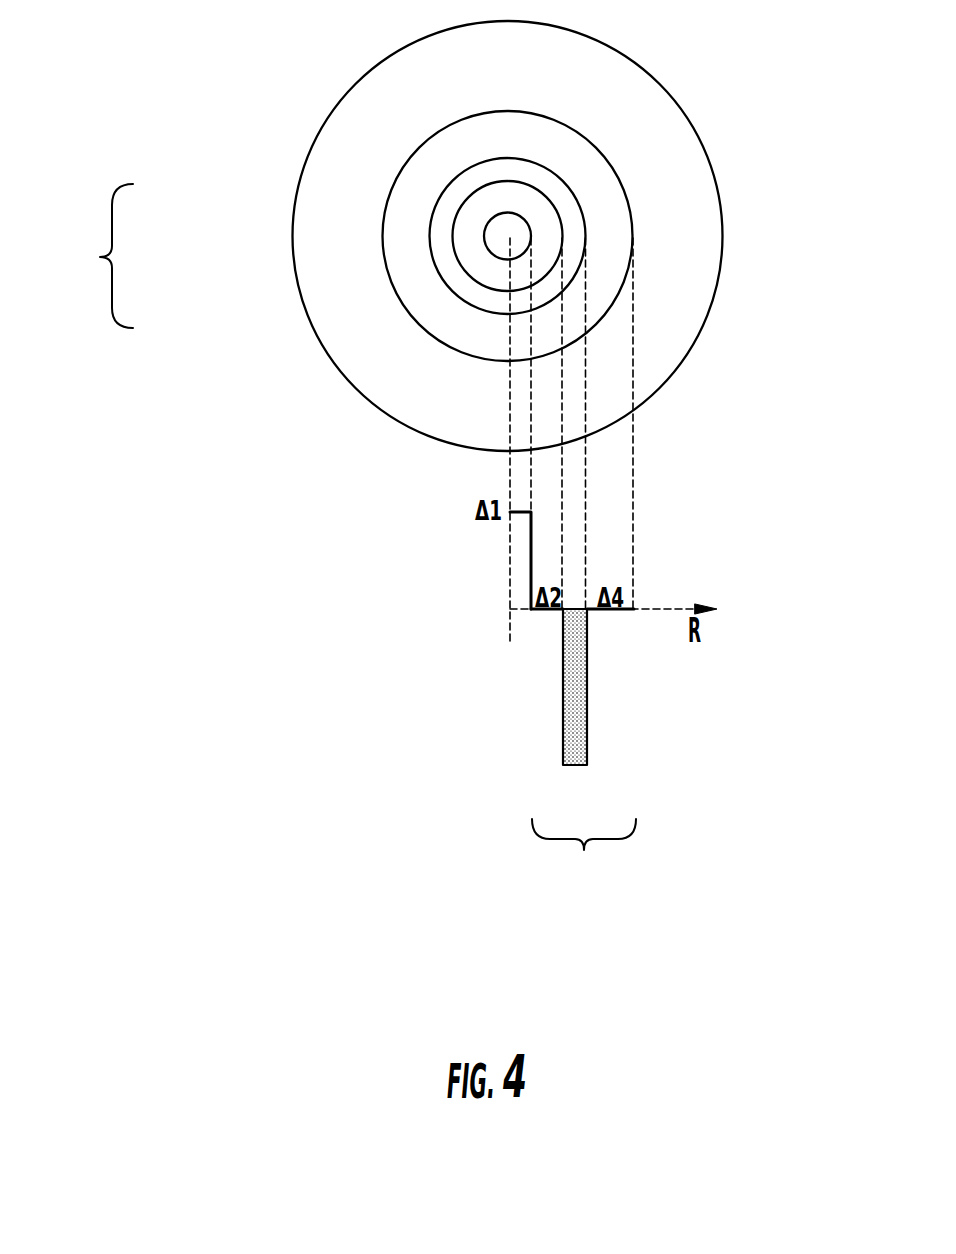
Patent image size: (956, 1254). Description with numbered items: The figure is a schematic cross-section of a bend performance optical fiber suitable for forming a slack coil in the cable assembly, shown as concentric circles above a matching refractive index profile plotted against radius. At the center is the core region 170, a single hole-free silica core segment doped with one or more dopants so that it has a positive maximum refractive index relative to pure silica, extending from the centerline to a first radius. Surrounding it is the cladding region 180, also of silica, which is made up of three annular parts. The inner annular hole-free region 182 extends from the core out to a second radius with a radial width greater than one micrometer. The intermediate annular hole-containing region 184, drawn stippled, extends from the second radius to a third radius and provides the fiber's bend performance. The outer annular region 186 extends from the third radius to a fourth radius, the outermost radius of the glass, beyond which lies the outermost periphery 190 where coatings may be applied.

The core region 170 is at (498, 237).
The cladding region 180 is at (342, 540).
The inner annular hole-free region 182 is at (466, 233).
The intermediate annular hole-containing region 184 is at (444, 217).
The outer annular region 186 is at (419, 188).
The outer peripheral region 190 is at (657, 249).